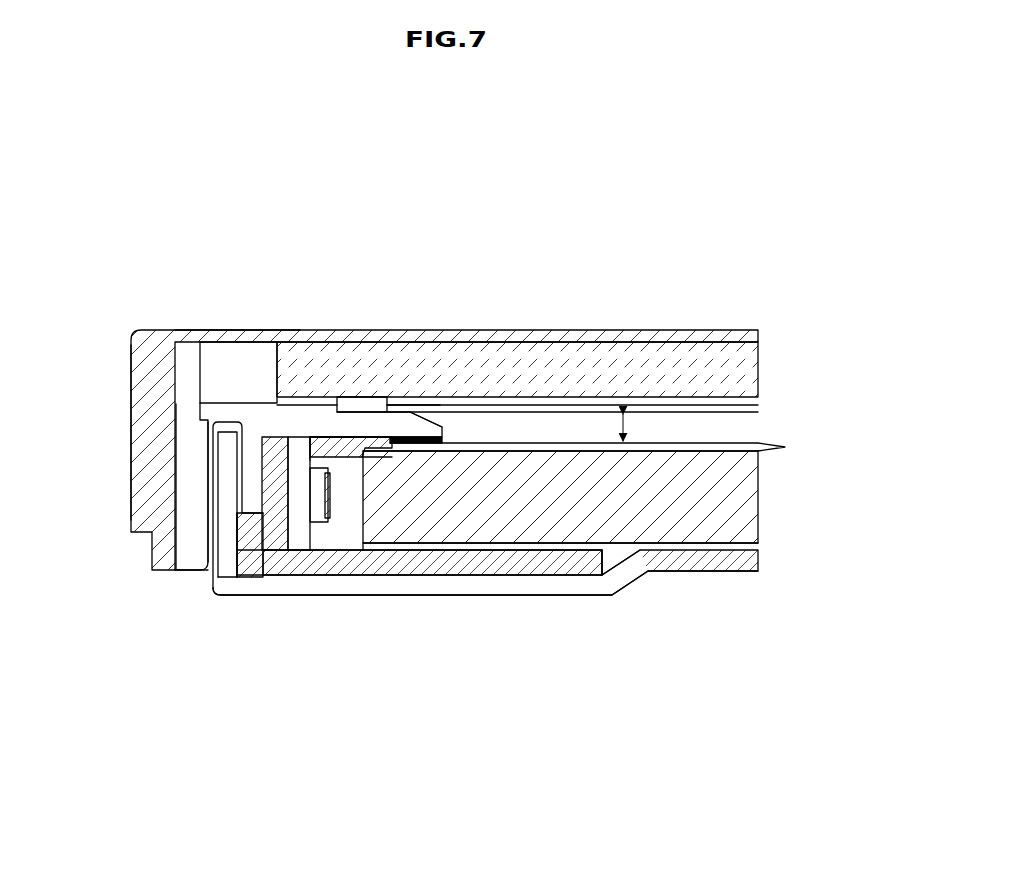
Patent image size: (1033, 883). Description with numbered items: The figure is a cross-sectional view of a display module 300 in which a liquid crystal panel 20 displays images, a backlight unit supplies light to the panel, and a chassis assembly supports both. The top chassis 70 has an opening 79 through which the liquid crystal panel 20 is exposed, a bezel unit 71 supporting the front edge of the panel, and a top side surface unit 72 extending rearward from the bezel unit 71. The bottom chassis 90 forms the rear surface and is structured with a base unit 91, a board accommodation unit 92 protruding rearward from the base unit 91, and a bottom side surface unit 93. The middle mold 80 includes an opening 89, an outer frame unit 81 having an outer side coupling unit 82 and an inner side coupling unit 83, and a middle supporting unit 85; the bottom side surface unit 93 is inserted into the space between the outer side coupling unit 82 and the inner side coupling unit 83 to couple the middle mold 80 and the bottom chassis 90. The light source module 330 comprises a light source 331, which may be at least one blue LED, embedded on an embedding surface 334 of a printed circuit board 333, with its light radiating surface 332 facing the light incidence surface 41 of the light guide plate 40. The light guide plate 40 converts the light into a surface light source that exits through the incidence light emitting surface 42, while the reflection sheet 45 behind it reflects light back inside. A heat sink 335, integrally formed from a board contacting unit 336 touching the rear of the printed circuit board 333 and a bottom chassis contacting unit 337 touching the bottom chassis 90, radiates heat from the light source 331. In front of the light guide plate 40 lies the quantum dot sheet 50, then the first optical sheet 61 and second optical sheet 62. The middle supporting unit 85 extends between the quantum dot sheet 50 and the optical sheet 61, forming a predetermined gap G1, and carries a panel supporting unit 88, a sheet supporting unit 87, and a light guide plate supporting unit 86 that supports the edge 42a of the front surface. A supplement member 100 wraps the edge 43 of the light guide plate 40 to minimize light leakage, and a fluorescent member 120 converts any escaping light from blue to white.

The display module 300 is at (668, 150).
The top chassis 70 is at (160, 328).
The bezel unit 71 is at (213, 330).
The top side surface unit 72 is at (131, 400).
The middle mold 80 is at (172, 488).
The outer frame unit 81 is at (233, 665).
The outer side coupling unit 82 is at (185, 575).
The inner side coupling unit 83 is at (228, 575).
The bottom side surface unit 93 is at (218, 446).
The bottom chassis 90 is at (497, 600).
The base unit 91 is at (697, 573).
The board accommodation unit 92 is at (548, 598).
The reflection sheet 45 is at (616, 578).
The heat sink 335 is at (427, 770).
The board contacting unit 336 is at (258, 580).
The bottom chassis contacting unit 337 is at (487, 574).
The light source module 330 is at (277, 672).
The light source 331 is at (318, 524).
The light radiating surface 332 is at (331, 518).
The printed circuit board 333 is at (292, 548).
The embedding surface 334 is at (305, 548).
The light guide plate supporting unit 86 is at (318, 440).
The panel supporting unit 88 is at (335, 440).
The supplement member 100 is at (345, 437).
The light incidence surface 41 is at (360, 455).
The edge 43 is at (392, 549).
The incidence light emitting surface 42 is at (583, 456).
The edge 42a is at (405, 446).
The light guide plate 40 is at (748, 494).
The quantum dot sheet 50 is at (745, 440).
The opening 89 is at (442, 428).
The liquid crystal panel 20 is at (538, 375).
The first optical sheet 61 is at (590, 404).
The second optical sheet 62 is at (548, 407).
The opening 79 is at (375, 398).
The sheet supporting unit 87 is at (400, 412).
The middle supporting unit 85 is at (420, 412).
The fluorescent member 120 is at (430, 420).
The predetermined gap G1 is at (639, 429).